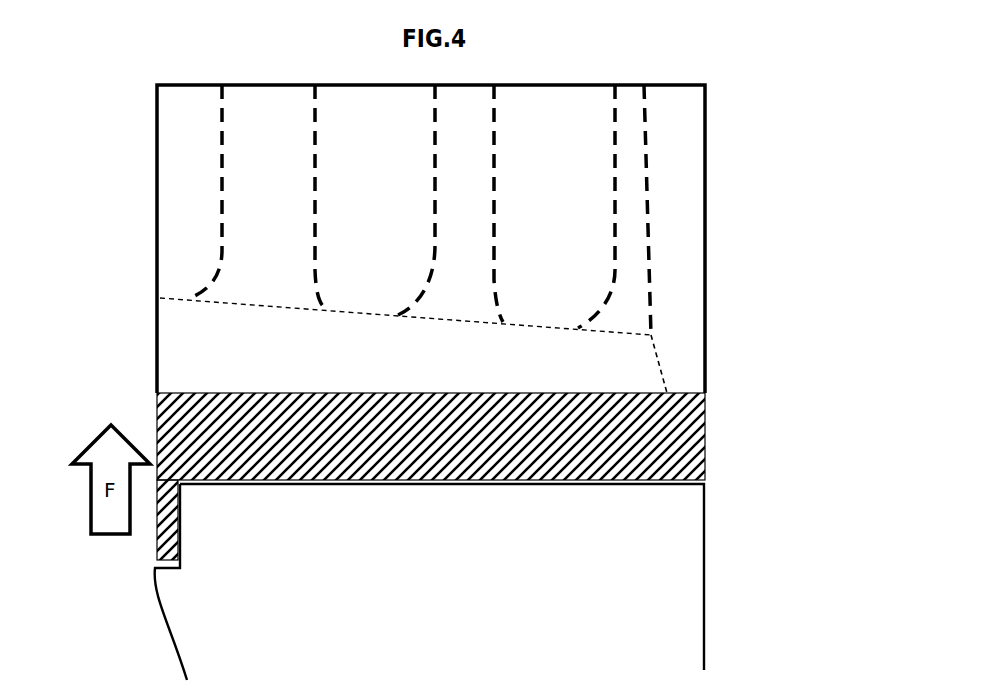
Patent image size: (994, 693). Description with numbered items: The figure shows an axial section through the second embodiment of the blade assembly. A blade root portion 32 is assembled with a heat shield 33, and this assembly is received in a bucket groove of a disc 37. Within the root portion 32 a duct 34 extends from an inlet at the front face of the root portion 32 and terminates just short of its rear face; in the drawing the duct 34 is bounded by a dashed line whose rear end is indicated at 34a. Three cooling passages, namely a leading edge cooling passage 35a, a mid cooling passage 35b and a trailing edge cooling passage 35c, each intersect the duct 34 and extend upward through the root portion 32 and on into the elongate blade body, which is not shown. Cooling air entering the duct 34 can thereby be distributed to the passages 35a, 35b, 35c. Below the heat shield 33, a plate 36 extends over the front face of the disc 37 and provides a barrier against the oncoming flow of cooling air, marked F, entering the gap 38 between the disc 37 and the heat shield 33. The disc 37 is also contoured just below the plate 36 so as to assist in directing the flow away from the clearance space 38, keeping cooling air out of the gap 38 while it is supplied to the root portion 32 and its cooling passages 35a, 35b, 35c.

The blade root portion 32 is at (690, 222).
The heat shield 33 is at (670, 438).
The duct 34 is at (200, 350).
The boundary line 34a is at (663, 368).
The leading edge cooling passage 35a is at (228, 165).
The mid cooling passage 35b is at (463, 216).
The trailing edge cooling passage 35c is at (628, 244).
The plate 36 is at (160, 525).
The disc 37 is at (444, 544).
The gap 38 is at (278, 484).